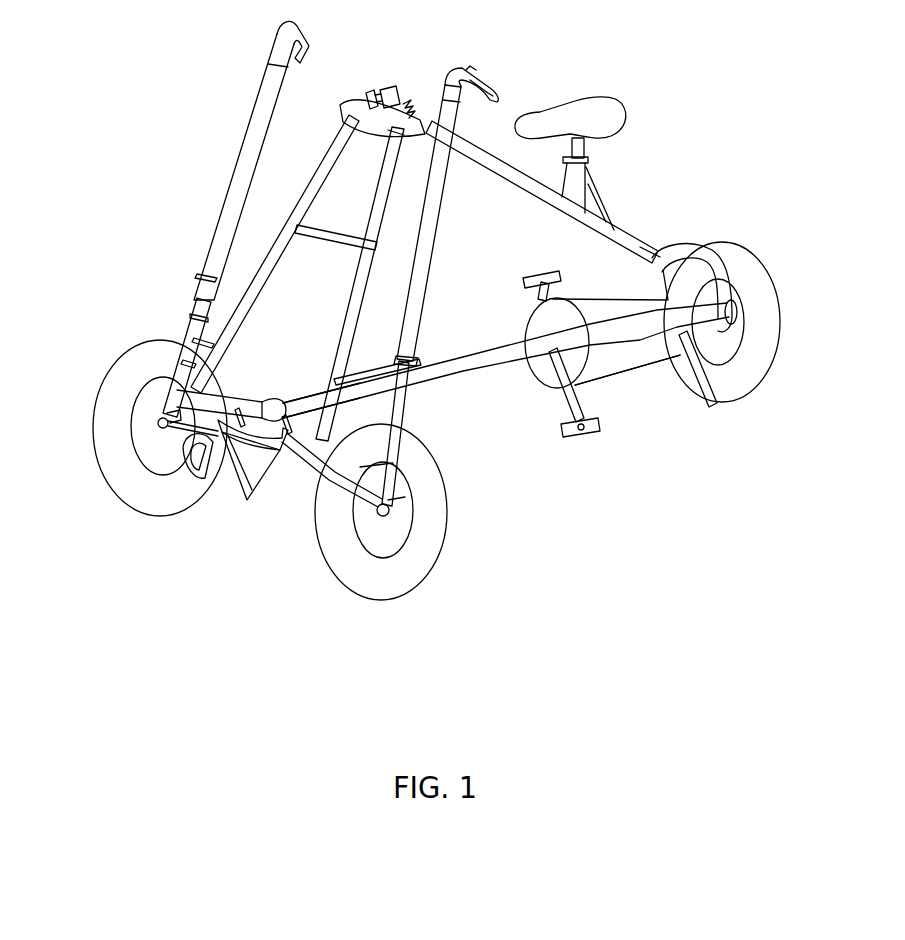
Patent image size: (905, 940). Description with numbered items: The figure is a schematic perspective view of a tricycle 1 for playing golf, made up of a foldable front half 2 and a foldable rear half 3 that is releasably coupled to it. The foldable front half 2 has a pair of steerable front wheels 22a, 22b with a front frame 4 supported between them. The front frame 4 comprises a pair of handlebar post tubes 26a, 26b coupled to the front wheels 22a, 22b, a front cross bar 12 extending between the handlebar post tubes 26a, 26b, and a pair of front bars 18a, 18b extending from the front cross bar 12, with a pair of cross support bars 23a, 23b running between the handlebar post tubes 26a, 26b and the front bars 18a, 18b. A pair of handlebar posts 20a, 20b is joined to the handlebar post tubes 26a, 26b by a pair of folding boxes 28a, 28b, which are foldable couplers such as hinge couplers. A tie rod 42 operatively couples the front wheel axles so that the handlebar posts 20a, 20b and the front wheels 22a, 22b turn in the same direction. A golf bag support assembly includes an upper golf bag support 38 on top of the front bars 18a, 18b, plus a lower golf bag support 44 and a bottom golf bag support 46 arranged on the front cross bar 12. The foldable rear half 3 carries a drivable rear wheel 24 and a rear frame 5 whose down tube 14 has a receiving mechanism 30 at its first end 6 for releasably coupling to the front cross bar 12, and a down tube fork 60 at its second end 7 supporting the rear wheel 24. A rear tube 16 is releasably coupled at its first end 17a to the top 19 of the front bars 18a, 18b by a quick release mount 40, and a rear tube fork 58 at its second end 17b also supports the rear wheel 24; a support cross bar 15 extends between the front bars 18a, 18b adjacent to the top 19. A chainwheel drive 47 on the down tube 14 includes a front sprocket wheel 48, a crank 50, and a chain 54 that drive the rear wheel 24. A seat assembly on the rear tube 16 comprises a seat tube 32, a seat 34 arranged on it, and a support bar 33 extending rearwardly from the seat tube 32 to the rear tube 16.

The tricycle 1 is at (722, 643).
The foldable front half 2 is at (205, 187).
The foldable rear half 3 is at (630, 223).
The front frame 4 is at (252, 380).
The rear frame 5 is at (510, 373).
The first end 6 is at (310, 407).
The second end 7 is at (633, 330).
The front cross bar 12 is at (227, 390).
The down tube 14 is at (467, 367).
The support cross bar 15 is at (333, 243).
The rear tube 16 is at (510, 177).
The first end 17a is at (427, 117).
The second end 17b is at (650, 252).
The front bar 18a is at (310, 193).
The front bar 18b is at (373, 243).
The top 19 is at (398, 148).
The handlebar post 20a is at (250, 128).
The handlebar post 20b is at (430, 233).
The steerable front wheel 22a is at (112, 390).
The steerable front wheel 22b is at (430, 497).
The cross support bar 23a is at (215, 308).
The cross support bar 23b is at (363, 377).
The drivable rear wheel 24 is at (753, 377).
The handlebar post tube 26a is at (185, 350).
The handlebar post tube 26b is at (403, 413).
The folding box 28a is at (210, 280).
The folding box 28b is at (417, 357).
The receiving mechanism 30 is at (277, 403).
The seat tube 32 is at (570, 177).
The support bar 33 is at (593, 188).
The seat 34 is at (597, 113).
The upper golf bag support 38 is at (357, 110).
The quick release mount 40 is at (383, 90).
The tie rod 42 is at (300, 470).
The lower golf bag support 44 is at (273, 483).
The bottom golf bag support 46 is at (227, 477).
The chainwheel drive 47 is at (597, 287).
The front sprocket wheel 48 is at (540, 320).
The crank 50 is at (560, 407).
The chain 54 is at (612, 377).
The rear tube fork 58 is at (693, 258).
The down tube fork 60 is at (697, 370).